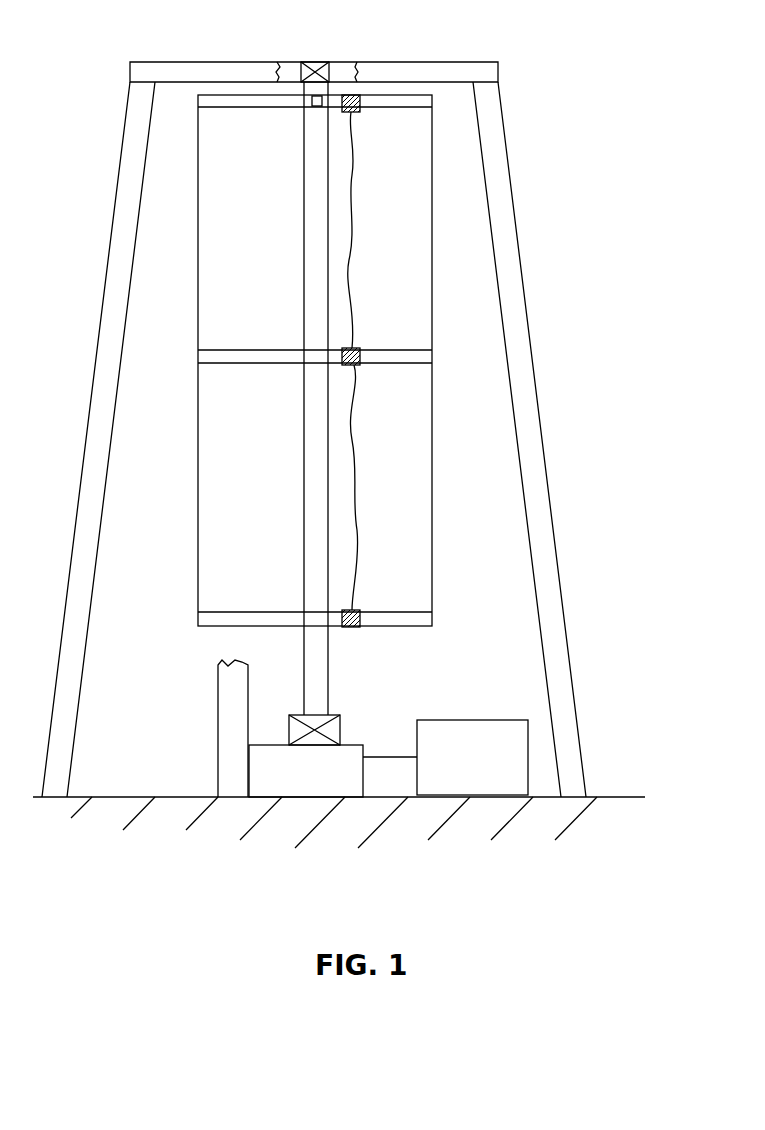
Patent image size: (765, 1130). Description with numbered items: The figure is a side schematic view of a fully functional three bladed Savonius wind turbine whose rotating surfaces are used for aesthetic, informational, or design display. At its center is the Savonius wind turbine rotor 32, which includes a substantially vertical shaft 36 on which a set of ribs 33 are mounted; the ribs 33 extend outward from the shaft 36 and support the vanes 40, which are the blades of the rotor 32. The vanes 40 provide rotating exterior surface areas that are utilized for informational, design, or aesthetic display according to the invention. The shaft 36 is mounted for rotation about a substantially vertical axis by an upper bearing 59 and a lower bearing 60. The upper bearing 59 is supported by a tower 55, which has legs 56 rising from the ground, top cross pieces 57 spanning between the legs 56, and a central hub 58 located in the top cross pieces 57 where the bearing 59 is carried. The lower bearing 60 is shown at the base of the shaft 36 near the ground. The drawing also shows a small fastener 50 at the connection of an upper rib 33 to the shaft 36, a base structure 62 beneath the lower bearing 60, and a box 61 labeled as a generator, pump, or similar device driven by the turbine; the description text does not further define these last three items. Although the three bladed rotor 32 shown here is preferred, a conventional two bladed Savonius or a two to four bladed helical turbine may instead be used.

The Savonius wind turbine rotor 32 is at (482, 296).
The ribs 33 is at (228, 108).
The vertical shaft 36 is at (320, 673).
The vanes 40 is at (402, 232).
The fastener 50 is at (306, 105).
The tower 55 is at (536, 128).
The legs 56 is at (74, 678).
The top cross pieces 57 is at (209, 76).
The central hub 58 is at (284, 70).
The bearing 59 is at (318, 64).
The bearing 60 is at (337, 728).
The generator, pump, etc. 61 is at (518, 735).
The base 62 is at (317, 772).